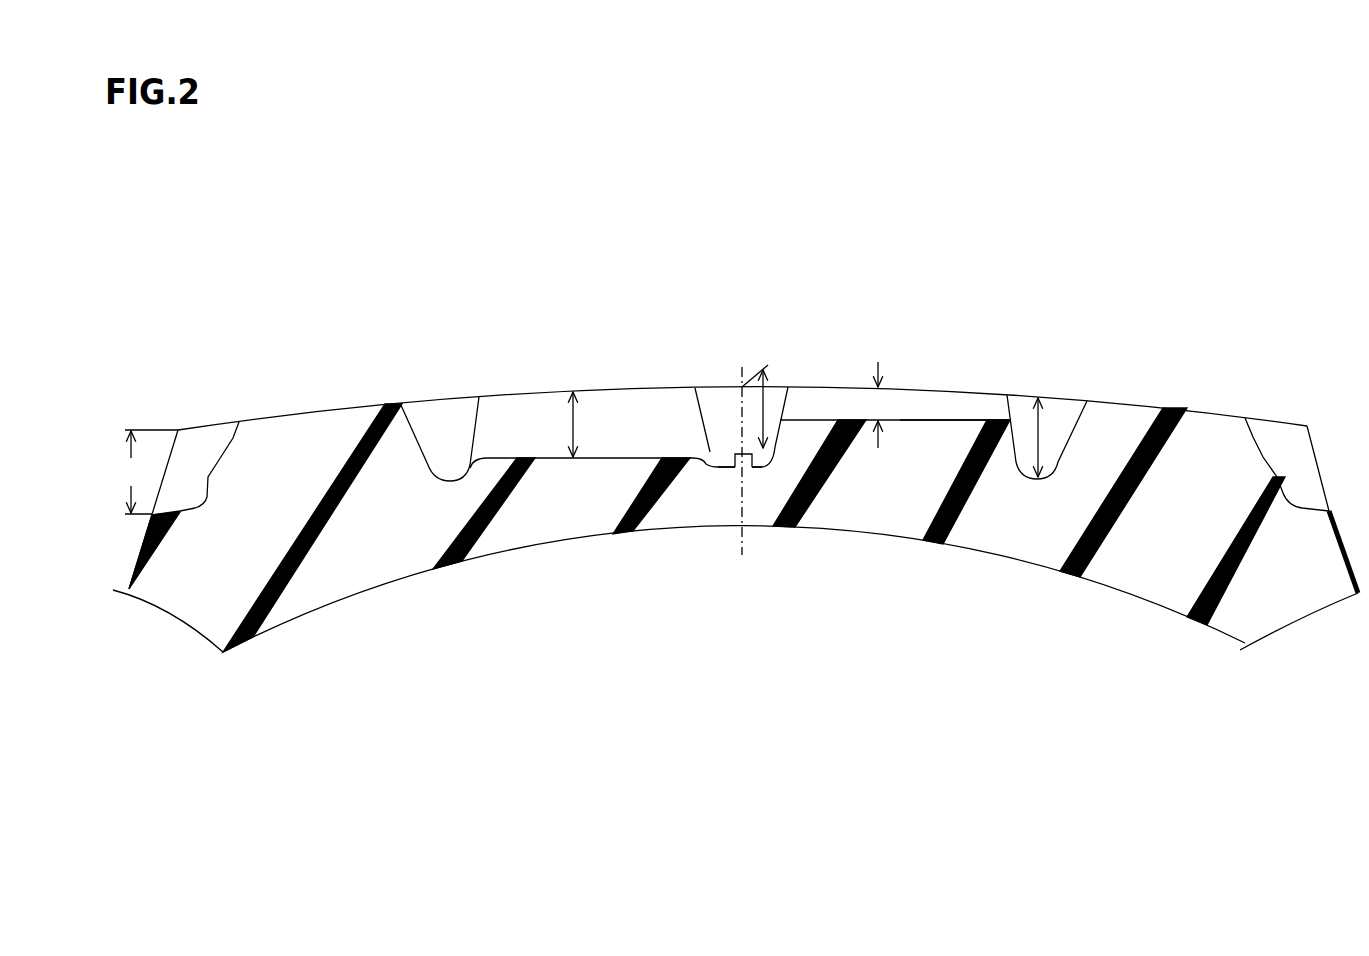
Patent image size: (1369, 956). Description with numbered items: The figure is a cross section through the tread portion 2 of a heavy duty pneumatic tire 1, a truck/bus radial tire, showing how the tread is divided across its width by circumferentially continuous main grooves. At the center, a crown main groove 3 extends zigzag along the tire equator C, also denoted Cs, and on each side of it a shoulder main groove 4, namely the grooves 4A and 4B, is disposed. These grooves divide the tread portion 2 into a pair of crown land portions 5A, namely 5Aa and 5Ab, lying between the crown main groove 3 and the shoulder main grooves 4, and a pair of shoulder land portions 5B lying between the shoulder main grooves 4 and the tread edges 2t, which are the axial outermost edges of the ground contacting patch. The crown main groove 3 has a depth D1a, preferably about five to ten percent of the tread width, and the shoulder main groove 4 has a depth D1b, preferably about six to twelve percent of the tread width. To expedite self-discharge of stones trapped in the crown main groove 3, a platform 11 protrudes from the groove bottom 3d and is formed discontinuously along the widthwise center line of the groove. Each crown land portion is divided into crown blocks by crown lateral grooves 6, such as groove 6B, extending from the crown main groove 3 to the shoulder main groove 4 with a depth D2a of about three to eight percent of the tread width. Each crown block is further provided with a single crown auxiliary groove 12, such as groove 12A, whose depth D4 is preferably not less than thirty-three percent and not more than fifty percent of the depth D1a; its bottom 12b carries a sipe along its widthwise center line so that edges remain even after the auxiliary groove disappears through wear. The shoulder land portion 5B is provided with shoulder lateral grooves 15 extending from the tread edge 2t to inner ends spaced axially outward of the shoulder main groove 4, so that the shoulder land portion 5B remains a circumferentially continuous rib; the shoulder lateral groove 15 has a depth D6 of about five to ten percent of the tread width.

The heavy duty pneumatic tire 1 is at (1243, 326).
The tread portion 2 is at (933, 390).
The tread edge 2t is at (178, 430).
The crown main groove 3 is at (731, 461).
The groove bottom 3d is at (697, 468).
The shoulder main groove 4 is at (743, 375).
The shoulder main groove 4A is at (1032, 430).
The shoulder main groove 4B is at (447, 433).
The crown land portion 5A is at (721, 419).
The crown land portion 5Aa is at (850, 388).
The crown land portion 5Ab is at (613, 389).
The shoulder land portion 5B is at (320, 411).
The crown lateral groove 6 is at (581, 550).
The crown lateral groove 6B is at (535, 448).
The platform 11 is at (736, 451).
The crown auxiliary groove 12 is at (894, 533).
The crown auxiliary groove 12A is at (832, 414).
The bottom of crown auxiliary groove 12b is at (940, 414).
The shoulder lateral groove 15 is at (200, 466).
The tire equator C is at (739, 470).
The tire equator Cs is at (739, 470).
The depth of crown main groove D1a is at (765, 412).
The depth of shoulder main groove D1b is at (1040, 478).
The depth of crown lateral groove D2a is at (574, 422).
The depth of crown auxiliary groove D4 is at (878, 449).
The depth of shoulder lateral groove D6 is at (145, 472).